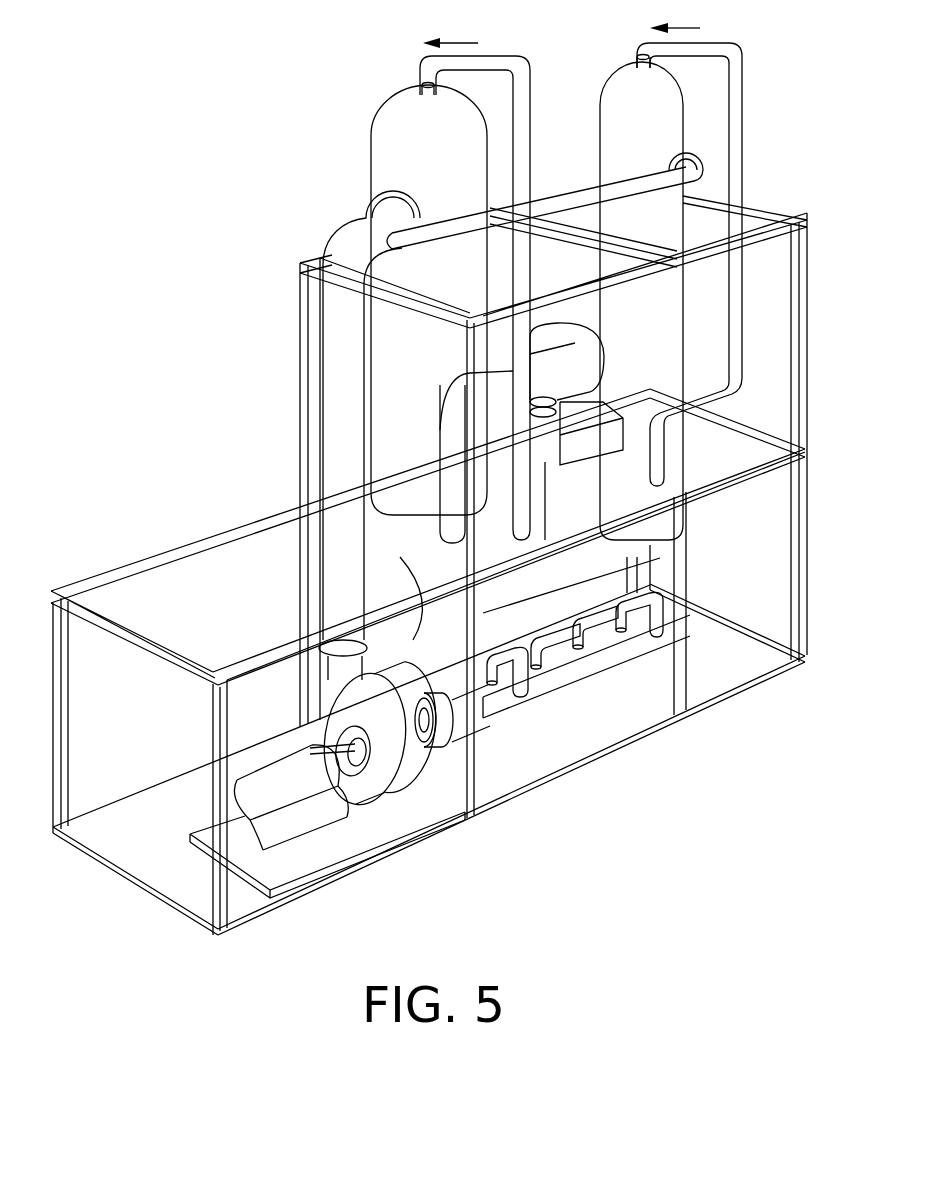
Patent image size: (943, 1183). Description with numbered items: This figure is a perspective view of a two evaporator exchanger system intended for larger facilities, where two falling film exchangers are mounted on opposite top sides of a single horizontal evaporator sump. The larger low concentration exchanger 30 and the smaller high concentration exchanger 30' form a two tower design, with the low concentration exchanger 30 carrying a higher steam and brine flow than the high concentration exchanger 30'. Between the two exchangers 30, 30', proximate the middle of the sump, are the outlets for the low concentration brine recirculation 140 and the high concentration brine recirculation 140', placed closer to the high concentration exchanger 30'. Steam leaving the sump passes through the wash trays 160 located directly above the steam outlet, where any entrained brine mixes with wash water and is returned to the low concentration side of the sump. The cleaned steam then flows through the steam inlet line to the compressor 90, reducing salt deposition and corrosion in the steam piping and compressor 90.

The low concentration exchanger 30 is at (500, 379).
The high concentration exchanger 30' is at (610, 274).
The low concentration brine recirculation 140 is at (500, 451).
The high concentration brine recirculation 140' is at (663, 430).
The wash trays 160 is at (545, 455).
The compressor 90 is at (414, 780).